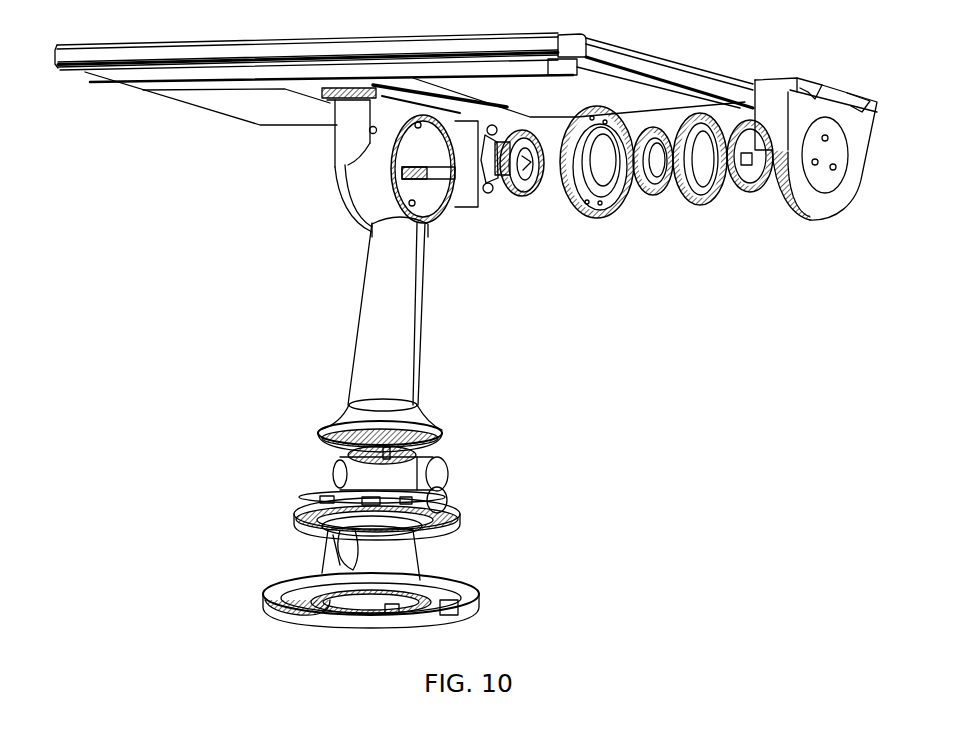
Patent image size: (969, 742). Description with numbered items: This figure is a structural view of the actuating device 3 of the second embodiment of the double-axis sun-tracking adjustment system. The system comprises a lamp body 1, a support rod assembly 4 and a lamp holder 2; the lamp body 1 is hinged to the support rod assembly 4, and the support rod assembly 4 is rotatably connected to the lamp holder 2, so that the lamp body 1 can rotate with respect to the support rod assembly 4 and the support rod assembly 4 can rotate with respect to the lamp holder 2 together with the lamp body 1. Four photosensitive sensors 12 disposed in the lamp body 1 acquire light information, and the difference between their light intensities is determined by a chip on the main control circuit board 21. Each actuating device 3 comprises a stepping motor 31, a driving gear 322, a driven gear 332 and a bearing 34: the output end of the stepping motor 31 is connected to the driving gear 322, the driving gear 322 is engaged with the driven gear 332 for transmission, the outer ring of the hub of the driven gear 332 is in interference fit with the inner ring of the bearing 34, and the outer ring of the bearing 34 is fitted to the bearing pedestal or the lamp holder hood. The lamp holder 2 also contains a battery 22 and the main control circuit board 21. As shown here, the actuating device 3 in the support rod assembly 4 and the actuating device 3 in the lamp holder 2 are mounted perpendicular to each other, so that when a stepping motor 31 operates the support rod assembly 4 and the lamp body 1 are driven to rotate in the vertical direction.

The lamp body 1 is at (140, 77).
The photosensitive sensor 12 is at (248, 103).
The stepping motor 31 is at (462, 172).
The driving gear 322 is at (500, 190).
The driven gear 332 is at (535, 197).
The bearing 34 is at (642, 188).
The support rod assembly 4 is at (384, 328).
The actuating device 3 is at (437, 428).
The battery 22 is at (437, 503).
The main control circuit board 21 is at (302, 512).
The lamp holder 2 is at (388, 553).